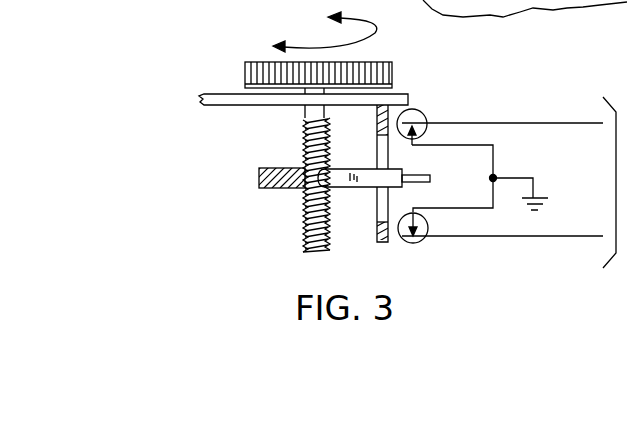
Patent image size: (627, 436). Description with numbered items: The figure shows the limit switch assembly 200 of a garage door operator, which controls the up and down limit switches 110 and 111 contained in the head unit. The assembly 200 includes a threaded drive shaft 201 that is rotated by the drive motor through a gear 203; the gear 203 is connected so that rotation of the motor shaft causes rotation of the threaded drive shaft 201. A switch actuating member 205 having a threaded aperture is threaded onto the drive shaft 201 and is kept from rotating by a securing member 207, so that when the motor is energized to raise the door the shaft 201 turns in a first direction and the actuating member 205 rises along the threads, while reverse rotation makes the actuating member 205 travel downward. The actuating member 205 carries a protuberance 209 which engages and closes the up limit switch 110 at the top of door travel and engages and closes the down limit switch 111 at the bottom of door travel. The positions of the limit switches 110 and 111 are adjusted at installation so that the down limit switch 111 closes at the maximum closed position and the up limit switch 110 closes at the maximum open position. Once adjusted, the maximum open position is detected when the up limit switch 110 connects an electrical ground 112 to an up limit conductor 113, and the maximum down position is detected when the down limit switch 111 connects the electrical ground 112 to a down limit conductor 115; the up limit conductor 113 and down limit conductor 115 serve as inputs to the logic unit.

The limit switch assembly 200 is at (220, 78).
The threaded drive shaft 201 is at (302, 232).
The gear 203 is at (383, 62).
The switch actuating member 205 is at (280, 189).
The securing member 207 is at (377, 230).
The protuberance 209 is at (419, 183).
The up limit switch 110 is at (421, 108).
The down limit switch 111 is at (421, 246).
The electrical ground 112 is at (537, 180).
The up limit conductor 113 is at (581, 124).
The down limit conductor 115 is at (551, 235).